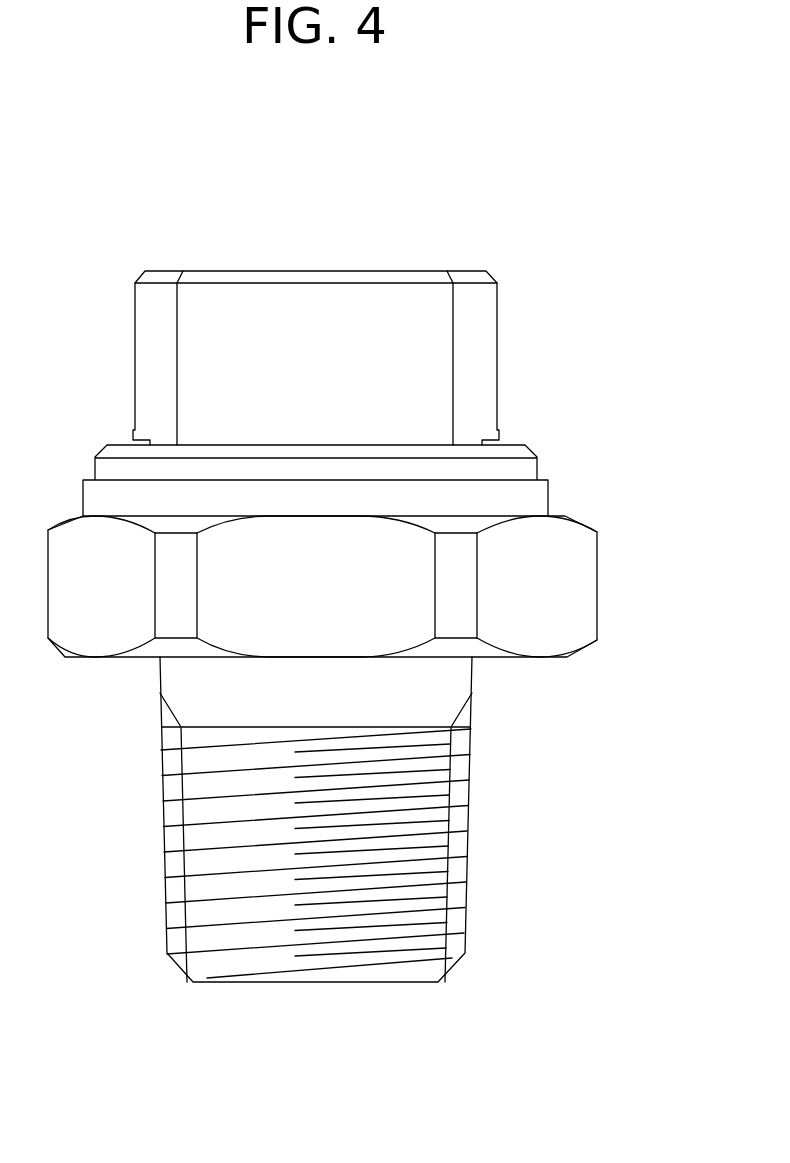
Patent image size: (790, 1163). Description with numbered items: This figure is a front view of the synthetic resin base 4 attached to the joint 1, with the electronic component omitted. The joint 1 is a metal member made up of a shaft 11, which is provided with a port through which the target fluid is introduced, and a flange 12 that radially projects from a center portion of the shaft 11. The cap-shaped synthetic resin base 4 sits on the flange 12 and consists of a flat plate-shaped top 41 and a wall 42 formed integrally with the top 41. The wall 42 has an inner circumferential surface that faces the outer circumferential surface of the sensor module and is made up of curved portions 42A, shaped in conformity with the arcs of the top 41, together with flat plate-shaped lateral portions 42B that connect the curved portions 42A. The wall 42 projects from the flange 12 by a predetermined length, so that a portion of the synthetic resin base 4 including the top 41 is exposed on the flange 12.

The joint 1 is at (583, 425).
The synthetic resin base 4 is at (118, 194).
The shaft 11 is at (462, 838).
The flange 12 is at (580, 578).
The top 41 is at (247, 272).
The wall 42 is at (522, 250).
The curved portions 42A is at (143, 367).
The lateral portions 42B is at (373, 307).